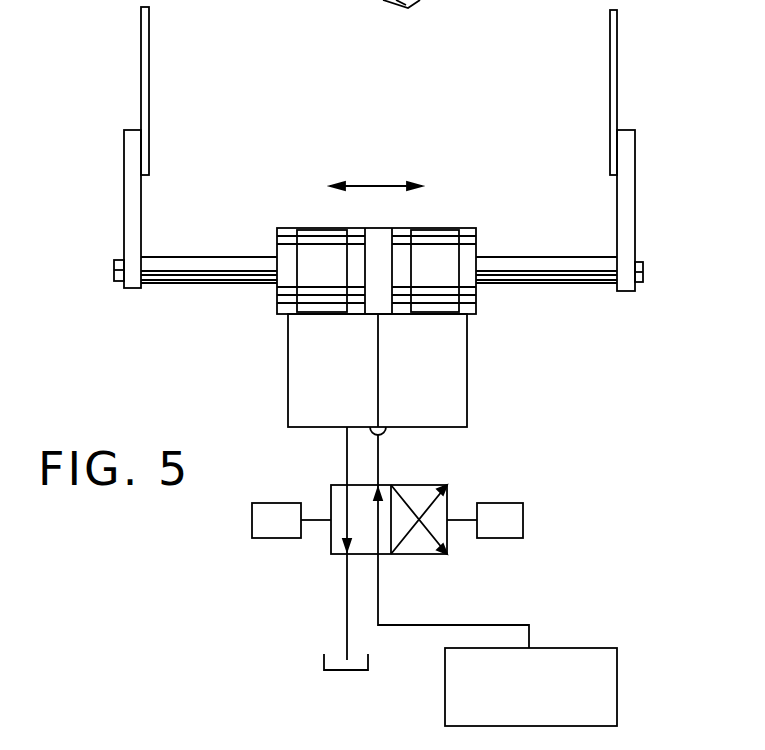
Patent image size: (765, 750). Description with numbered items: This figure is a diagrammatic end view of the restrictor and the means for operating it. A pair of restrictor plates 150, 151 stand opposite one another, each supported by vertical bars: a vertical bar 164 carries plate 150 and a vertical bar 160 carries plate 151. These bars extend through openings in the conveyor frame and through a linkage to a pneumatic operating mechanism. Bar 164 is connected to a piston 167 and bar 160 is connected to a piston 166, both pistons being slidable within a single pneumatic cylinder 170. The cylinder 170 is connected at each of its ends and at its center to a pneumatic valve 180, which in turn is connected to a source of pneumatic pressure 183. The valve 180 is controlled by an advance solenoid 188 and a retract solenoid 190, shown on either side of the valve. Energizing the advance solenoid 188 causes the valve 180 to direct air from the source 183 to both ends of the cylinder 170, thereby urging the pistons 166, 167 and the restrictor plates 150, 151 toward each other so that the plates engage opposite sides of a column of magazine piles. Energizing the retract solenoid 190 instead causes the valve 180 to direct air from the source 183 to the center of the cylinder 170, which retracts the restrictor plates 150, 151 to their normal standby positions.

The restrictor plate 150 is at (142, 52).
The restrictor plate 151 is at (618, 50).
The vertical bar 164 is at (132, 141).
The vertical bar 160 is at (627, 160).
The pneumatic cylinder 170 is at (390, 226).
The piston 167 is at (333, 240).
The piston 166 is at (430, 240).
The pneumatic valve 180 is at (413, 485).
The retract solenoid 190 is at (285, 503).
The advance solenoid 188 is at (505, 503).
The source of pneumatic pressure 183 is at (570, 648).